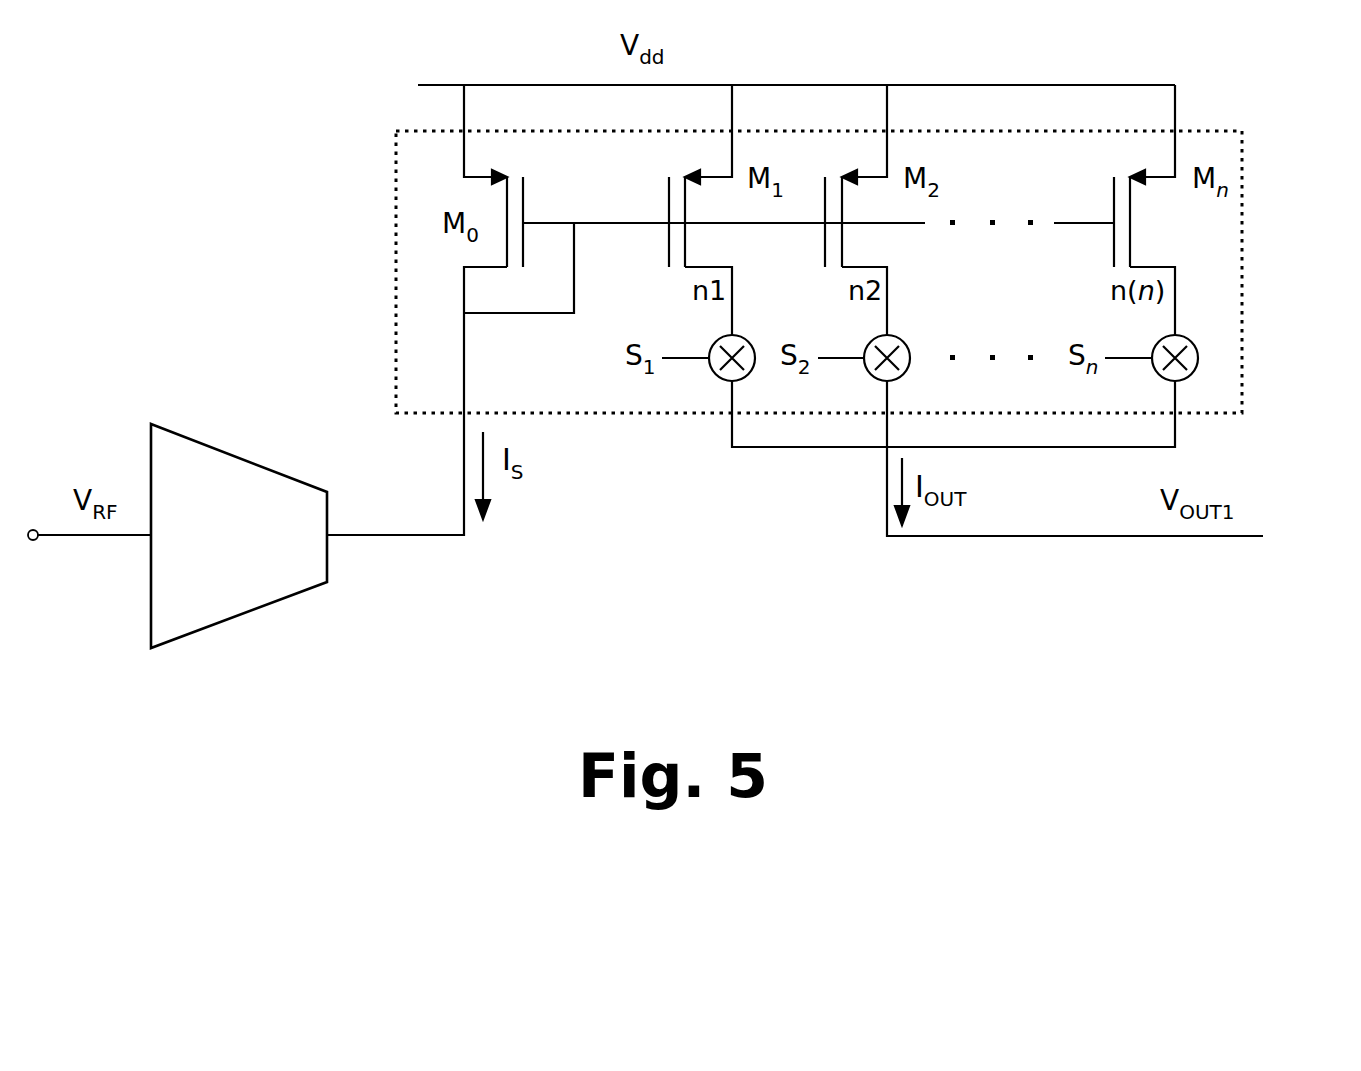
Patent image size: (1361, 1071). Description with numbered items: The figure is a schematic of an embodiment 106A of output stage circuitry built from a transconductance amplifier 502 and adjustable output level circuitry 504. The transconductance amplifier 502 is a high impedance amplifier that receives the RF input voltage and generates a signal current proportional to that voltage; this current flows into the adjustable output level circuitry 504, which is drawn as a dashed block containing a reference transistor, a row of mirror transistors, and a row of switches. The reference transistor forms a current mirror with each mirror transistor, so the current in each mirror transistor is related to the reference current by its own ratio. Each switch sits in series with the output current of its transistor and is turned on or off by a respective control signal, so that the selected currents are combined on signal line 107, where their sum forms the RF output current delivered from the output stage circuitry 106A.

The transconductance amplifier 502 is at (237, 617).
The adjustable output level circuitry 504 is at (1215, 414).
The signal line 107 is at (1180, 538).
The output stage circuitry 106A is at (393, 687).